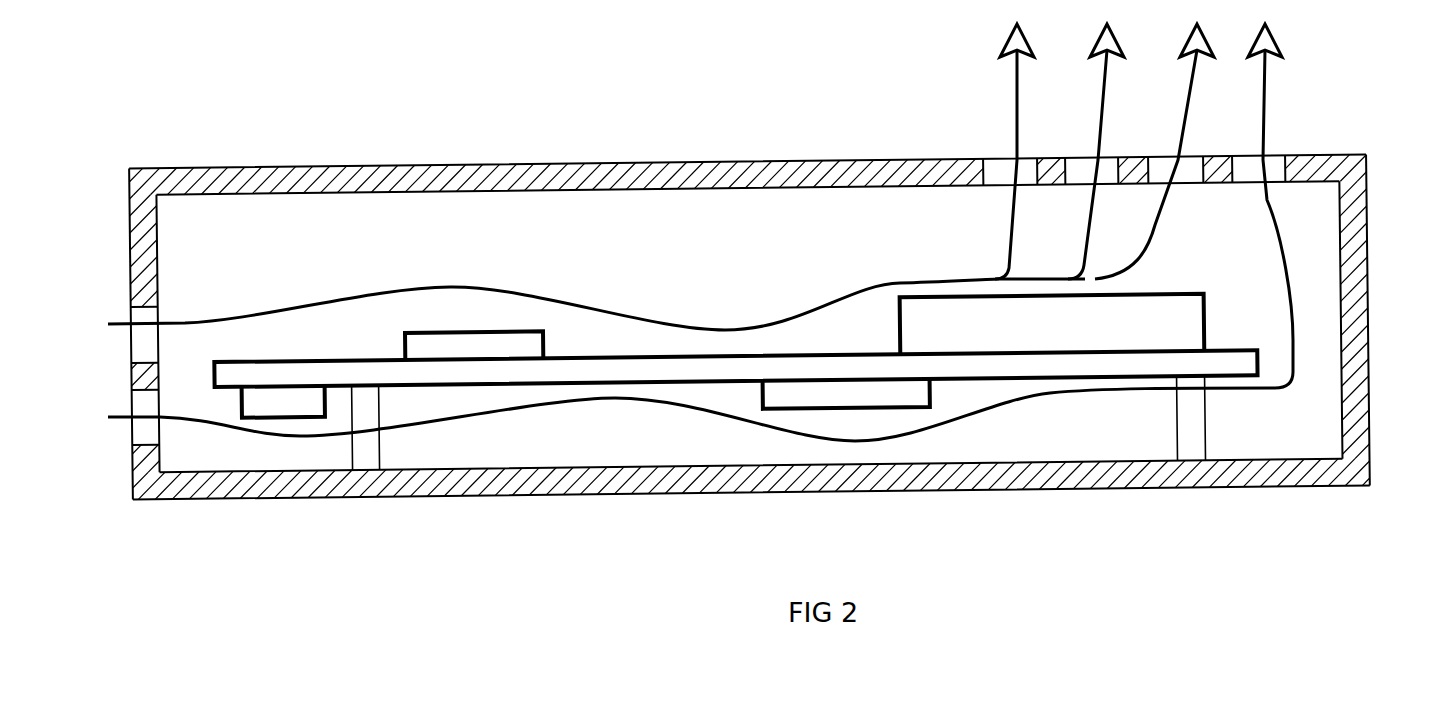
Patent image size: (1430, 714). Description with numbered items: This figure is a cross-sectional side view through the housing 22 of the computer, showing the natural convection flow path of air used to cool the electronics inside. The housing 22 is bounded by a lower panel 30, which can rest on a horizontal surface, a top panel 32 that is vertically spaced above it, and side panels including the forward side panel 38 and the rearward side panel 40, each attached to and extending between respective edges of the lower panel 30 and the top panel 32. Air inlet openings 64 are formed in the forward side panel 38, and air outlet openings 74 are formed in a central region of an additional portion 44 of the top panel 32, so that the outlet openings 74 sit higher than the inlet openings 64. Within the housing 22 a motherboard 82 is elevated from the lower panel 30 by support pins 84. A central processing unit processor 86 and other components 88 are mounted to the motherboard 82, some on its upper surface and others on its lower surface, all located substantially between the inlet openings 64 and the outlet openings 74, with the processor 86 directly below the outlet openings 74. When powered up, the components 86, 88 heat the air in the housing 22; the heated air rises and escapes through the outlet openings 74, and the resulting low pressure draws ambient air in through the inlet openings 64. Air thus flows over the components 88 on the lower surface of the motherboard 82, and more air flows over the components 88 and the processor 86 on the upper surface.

The housing 22 is at (208, 159).
The lower panel 30 is at (1012, 483).
The top panel 32 is at (610, 163).
The forward side panel 38 is at (140, 238).
The rearward side panel 40 is at (1366, 345).
The additional portion 44 is at (1303, 150).
The air inlet openings 64 is at (133, 345).
The air outlet openings 74 is at (993, 160).
The motherboard 82 is at (1222, 355).
The support pins 84 is at (378, 445).
The central processing unit processor 86 is at (1175, 303).
The other components 88 is at (243, 410).